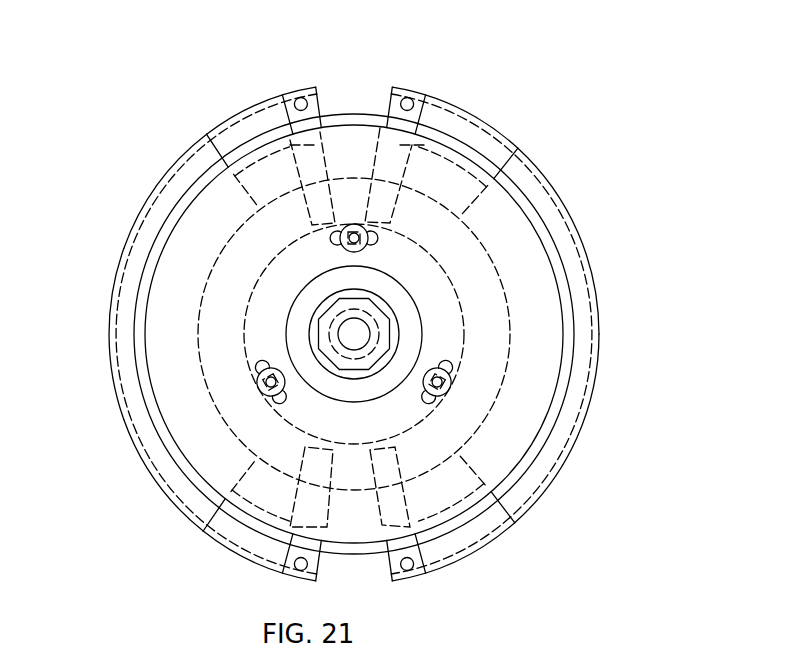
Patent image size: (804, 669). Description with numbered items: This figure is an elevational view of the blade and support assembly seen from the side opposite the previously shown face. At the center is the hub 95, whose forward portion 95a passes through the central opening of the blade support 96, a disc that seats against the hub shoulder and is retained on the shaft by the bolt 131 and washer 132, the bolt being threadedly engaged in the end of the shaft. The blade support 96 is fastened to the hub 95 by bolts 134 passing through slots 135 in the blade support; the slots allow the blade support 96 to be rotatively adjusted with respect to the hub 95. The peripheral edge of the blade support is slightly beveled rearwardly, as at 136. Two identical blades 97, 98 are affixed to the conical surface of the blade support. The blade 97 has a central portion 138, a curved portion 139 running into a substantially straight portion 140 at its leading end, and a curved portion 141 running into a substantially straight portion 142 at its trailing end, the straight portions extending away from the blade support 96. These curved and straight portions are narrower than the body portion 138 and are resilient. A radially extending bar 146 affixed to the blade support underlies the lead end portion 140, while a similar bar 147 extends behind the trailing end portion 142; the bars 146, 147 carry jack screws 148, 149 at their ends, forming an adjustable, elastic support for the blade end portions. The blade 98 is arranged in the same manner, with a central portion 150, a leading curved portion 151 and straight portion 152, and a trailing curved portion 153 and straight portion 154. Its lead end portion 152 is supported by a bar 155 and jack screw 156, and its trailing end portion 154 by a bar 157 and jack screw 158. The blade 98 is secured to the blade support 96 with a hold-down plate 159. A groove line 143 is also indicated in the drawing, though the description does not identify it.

The hub 95 is at (404, 310).
The forward portion of hub 95a is at (336, 278).
The blade support 96 is at (370, 136).
The blade 97 is at (137, 217).
The blade 98 is at (590, 266).
The bolt 131 is at (371, 314).
The washer 132 is at (396, 333).
The bolts 134 is at (366, 235).
The slots 135 is at (346, 248).
The beveled peripheral edge 136 is at (495, 136).
The central portion of blade 138 is at (112, 299).
The curved portion 139 is at (204, 528).
The substantially straight portion 140 is at (241, 556).
The curved portion 141 is at (212, 140).
The substantially straight portion 142 is at (266, 101).
The groove 143 is at (126, 256).
The radially extending bar 146 is at (333, 500).
The radially extending bar 147 is at (323, 160).
The jack screw 148 is at (296, 570).
The jack screw 149 is at (303, 97).
The central portion of blade 150 is at (572, 218).
The curved portion 151 is at (522, 151).
The substantially straight portion 152 is at (460, 108).
The curved portion 153 is at (510, 522).
The substantially straight portion 154 is at (458, 562).
The bar 155 is at (410, 86).
The jack screw 156 is at (419, 97).
The bar 157 is at (395, 556).
The jack screw 158 is at (424, 575).
The hold-down plate 159 is at (594, 338).